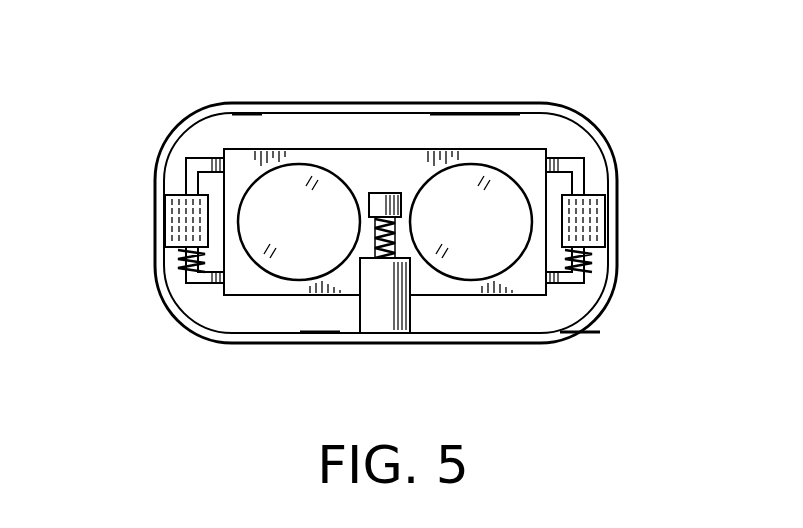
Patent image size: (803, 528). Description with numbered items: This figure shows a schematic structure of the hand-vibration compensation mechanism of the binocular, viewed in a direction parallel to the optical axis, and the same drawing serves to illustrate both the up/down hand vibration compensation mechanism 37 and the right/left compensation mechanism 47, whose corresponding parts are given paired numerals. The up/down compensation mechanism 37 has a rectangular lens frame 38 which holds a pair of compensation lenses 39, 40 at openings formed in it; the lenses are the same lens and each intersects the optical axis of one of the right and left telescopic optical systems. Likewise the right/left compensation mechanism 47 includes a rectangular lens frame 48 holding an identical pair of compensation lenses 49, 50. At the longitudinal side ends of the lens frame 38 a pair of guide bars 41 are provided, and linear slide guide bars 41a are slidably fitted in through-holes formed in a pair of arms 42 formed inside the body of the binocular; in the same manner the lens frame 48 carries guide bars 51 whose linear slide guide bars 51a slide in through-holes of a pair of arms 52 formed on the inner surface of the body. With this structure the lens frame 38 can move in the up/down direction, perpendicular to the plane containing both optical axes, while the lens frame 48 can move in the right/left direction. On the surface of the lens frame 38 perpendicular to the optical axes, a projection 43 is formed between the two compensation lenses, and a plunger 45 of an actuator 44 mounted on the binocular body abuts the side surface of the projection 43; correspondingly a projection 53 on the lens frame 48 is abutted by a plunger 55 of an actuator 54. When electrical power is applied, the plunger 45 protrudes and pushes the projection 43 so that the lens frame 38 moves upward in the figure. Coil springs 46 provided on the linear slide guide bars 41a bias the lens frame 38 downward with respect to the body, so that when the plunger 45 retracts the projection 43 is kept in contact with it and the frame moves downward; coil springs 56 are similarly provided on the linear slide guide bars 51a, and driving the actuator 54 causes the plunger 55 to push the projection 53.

The up/down hand vibration compensation mechanism 37 is at (386, 171).
The right/left compensation mechanism 47 is at (545, 72).
The lens frame 38 is at (385, 159).
The lens frame 48 is at (388, 166).
The compensation lens 39 is at (293, 288).
The compensation lens 49 is at (283, 262).
The compensation lens 40 is at (471, 151).
The compensation lens 50 is at (468, 180).
The guide bar 41 is at (389, 157).
The guide bar 51 is at (602, 95).
The linear slide guide bar 41a is at (387, 149).
The linear slide guide bar 51a is at (661, 161).
The arm 42 is at (383, 230).
The arm 52 is at (166, 218).
The projection 43 is at (336, 124).
The projection 53 is at (383, 197).
The actuator 44 is at (371, 340).
The actuator 54 is at (383, 308).
The plunger 45 is at (446, 313).
The plunger 55 is at (396, 247).
The coil spring 46 is at (385, 293).
The coil spring 56 is at (177, 256).